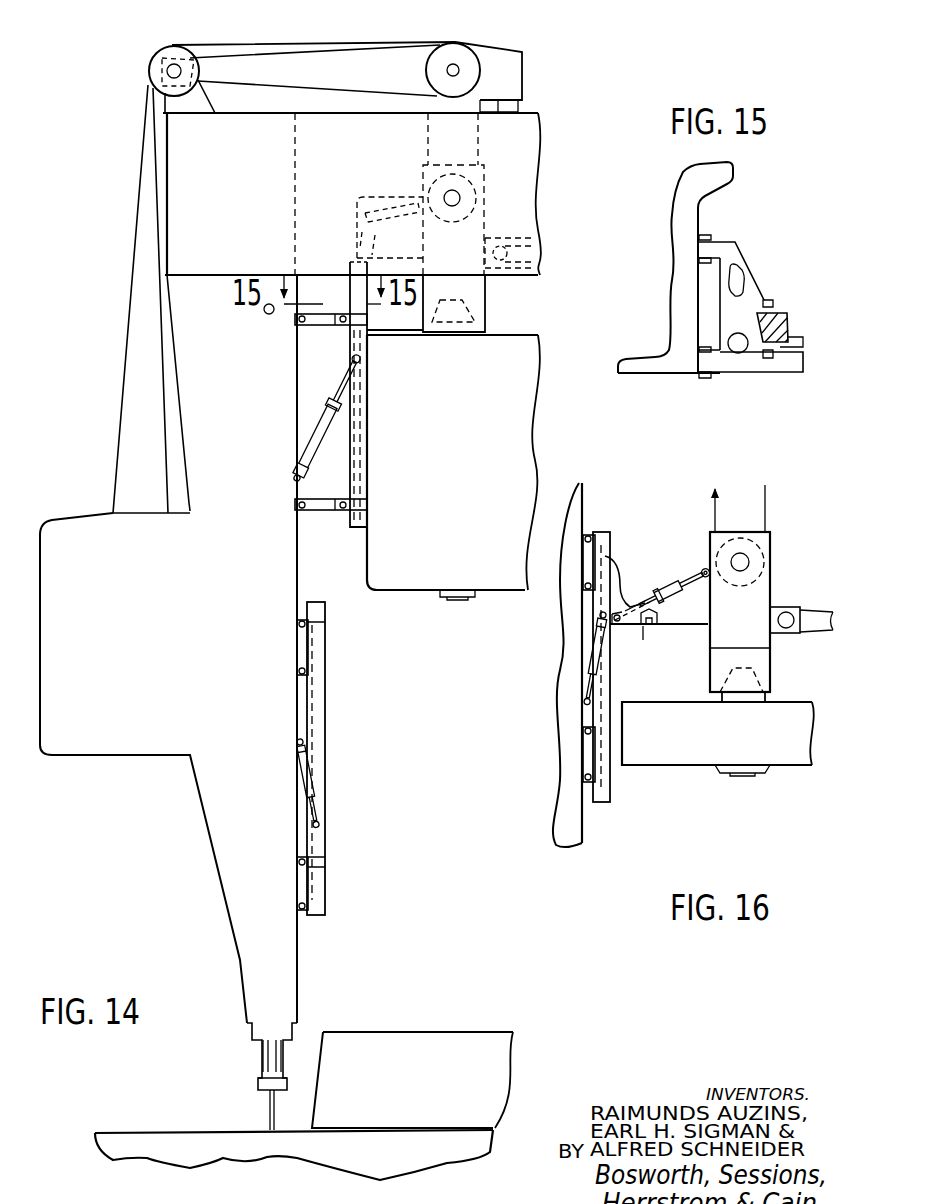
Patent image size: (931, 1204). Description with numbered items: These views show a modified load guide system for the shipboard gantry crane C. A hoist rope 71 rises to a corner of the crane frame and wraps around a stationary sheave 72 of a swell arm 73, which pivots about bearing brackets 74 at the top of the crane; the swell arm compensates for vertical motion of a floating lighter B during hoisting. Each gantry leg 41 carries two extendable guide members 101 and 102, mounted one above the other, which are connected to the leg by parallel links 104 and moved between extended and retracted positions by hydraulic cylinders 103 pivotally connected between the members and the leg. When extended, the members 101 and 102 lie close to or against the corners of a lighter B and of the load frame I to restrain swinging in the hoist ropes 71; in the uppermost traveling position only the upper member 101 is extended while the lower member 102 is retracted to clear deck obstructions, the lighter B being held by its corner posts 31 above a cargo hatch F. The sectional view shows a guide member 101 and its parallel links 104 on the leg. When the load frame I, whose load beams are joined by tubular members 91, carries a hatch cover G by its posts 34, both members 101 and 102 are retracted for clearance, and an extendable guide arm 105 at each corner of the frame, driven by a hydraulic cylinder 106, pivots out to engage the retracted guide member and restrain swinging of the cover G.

In FIG. 14, the corner post 31 is at (482, 337).
In FIG. 16, the upwardly extending post 34 is at (758, 705).
In FIG. 14, the port leg 41 is at (207, 838).
In FIG. 16, the port leg 41 is at (585, 827).
In FIG. 14, the hoist rope 71 is at (163, 417).
In FIG. 16, the hoist rope 71 is at (765, 503).
In FIG. 14, the stationary sheave 72 is at (174, 46).
In FIG. 14, the swell arm 73 is at (507, 46).
In FIG. 14, the bearing bracket 74 is at (482, 72).
In FIG. 16, the tubular member 91 is at (810, 612).
In FIG. 14, the extendable guide member 101 is at (369, 441).
In FIG. 15, the extendable guide member 101 is at (789, 324).
In FIG. 16, the extendable guide member 101 is at (612, 540).
In FIG. 14, the extendable guide member 102 is at (327, 656).
In FIG. 14, the hydraulic cylinder 103 is at (301, 422).
In FIG. 16, the hydraulic cylinder 103 is at (587, 670).
In FIG. 14, the parallel link 104 is at (322, 327).
In FIG. 15, the parallel link 104 is at (742, 256).
In FIG. 16, the parallel link 104 is at (585, 565).
In FIG. 16, the extendable guide arm 105 is at (621, 590).
In FIG. 16, the hydraulic cylinder 106 is at (684, 575).
In FIG. 14, the lighter B is at (514, 426).
In FIG. 14, the gantry crane C is at (106, 379).
In FIG. 14, the cargo hatch F is at (429, 1032).
In FIG. 16, the hatch cover G is at (695, 774).
In FIG. 16, the load frame I is at (773, 538).